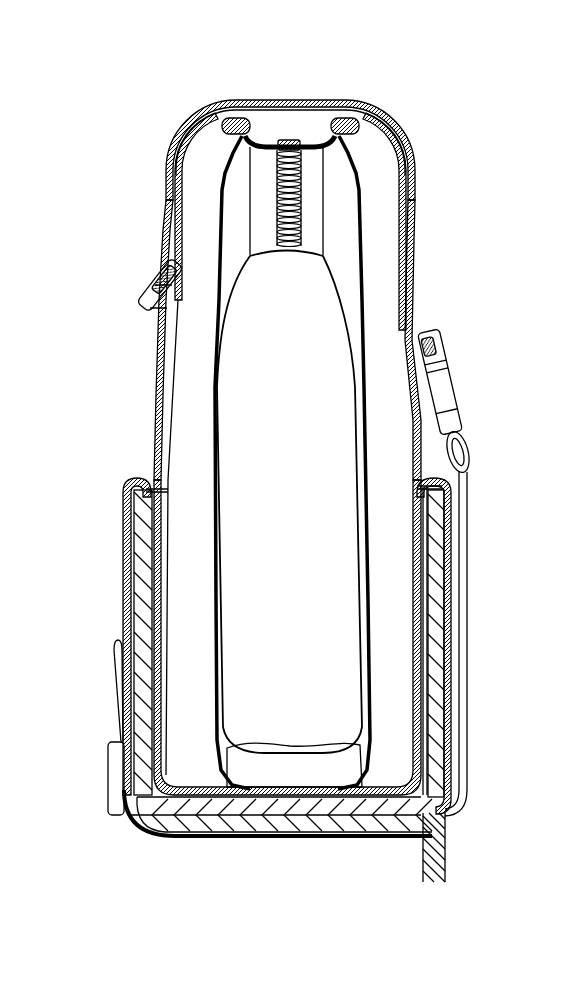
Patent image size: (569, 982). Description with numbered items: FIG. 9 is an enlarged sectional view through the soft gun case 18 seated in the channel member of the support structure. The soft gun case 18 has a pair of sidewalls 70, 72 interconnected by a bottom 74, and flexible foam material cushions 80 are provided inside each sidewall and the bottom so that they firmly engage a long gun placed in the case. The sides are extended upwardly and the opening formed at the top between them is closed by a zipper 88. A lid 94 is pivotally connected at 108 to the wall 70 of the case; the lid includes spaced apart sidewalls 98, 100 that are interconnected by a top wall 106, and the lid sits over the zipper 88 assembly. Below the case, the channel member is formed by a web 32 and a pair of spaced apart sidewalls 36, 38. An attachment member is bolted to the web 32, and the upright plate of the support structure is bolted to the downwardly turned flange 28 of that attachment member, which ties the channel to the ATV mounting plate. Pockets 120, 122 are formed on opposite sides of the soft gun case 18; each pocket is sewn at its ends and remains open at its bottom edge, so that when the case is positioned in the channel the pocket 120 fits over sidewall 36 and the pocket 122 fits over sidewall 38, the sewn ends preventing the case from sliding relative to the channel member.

The soft gun case 18 is at (427, 161).
The downwardly turned flange 28 is at (450, 838).
The web 32 is at (230, 837).
The sidewall 36 is at (137, 587).
The sidewall 38 is at (435, 663).
The sidewall 70 is at (154, 433).
The sidewall 72 is at (422, 417).
The bottom 74 is at (318, 783).
The flexible foam material cushions 80 is at (380, 230).
The zipper 88 is at (300, 190).
The lid 94 is at (151, 204).
The sidewall 98 is at (164, 187).
The sidewall 100 is at (414, 180).
The top wall 106 is at (298, 103).
The pivotal connection 108 is at (150, 305).
The pocket 120 is at (140, 517).
The pocket 122 is at (467, 590).